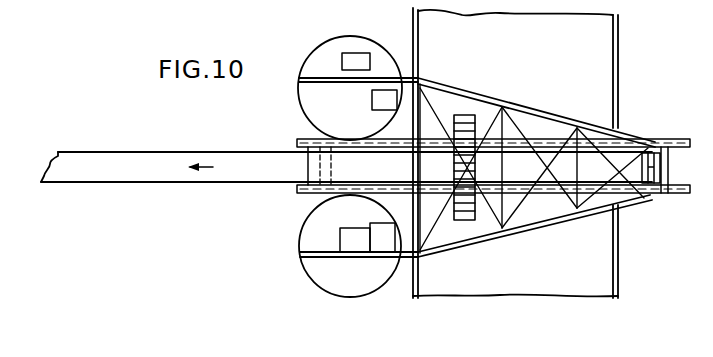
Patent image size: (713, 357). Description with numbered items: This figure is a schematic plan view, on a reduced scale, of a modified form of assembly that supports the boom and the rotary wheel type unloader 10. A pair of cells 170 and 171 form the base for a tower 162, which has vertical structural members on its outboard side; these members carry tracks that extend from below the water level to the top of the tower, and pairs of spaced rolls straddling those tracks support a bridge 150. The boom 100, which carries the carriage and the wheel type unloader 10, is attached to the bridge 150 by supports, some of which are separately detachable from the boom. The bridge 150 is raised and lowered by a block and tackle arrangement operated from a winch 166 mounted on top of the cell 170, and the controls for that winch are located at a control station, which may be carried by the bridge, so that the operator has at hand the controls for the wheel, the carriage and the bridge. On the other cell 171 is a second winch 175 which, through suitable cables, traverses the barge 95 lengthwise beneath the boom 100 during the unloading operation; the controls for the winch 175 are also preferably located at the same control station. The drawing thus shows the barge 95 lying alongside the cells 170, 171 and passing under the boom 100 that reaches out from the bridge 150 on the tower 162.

The workpiece / ladder element 10 is at (463, 115).
The barge 95 is at (549, 57).
The boom 100 is at (658, 200).
The bridge 150 is at (532, 103).
The tower 162 is at (306, 84).
The winch 166 is at (372, 110).
The cell 170 is at (312, 58).
The cell 171 is at (298, 238).
The winch 175 is at (340, 232).